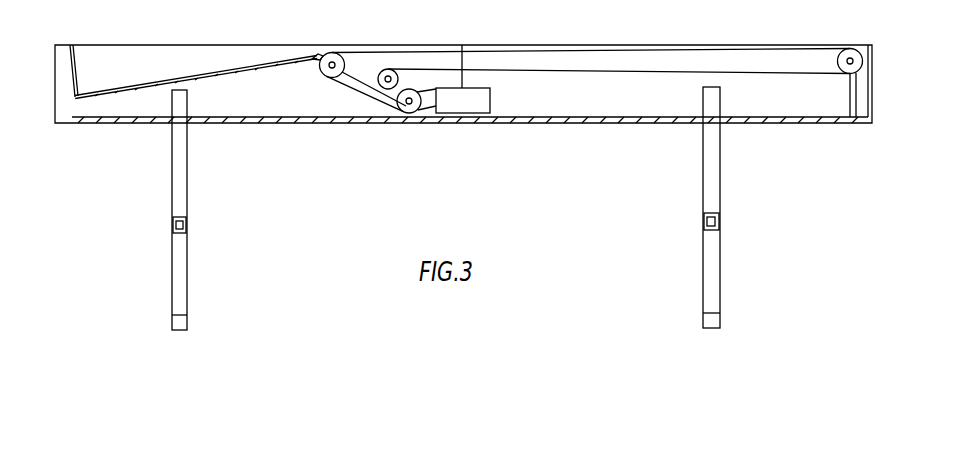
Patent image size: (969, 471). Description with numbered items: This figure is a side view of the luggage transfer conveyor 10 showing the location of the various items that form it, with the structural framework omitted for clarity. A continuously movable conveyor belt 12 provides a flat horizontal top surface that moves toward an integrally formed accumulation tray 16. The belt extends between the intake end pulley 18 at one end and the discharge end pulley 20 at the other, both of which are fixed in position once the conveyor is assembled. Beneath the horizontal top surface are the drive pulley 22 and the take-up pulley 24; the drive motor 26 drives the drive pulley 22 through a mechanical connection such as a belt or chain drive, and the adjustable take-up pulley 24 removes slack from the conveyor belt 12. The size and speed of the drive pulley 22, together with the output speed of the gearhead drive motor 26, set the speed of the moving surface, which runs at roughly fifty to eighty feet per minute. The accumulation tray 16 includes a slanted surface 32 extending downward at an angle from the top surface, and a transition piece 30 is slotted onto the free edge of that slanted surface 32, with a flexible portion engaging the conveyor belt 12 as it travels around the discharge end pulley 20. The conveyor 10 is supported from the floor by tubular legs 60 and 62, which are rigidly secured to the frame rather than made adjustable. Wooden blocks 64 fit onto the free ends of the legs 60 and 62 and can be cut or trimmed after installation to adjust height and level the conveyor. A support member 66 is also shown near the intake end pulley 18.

The luggage transfer conveyor 10 is at (546, 155).
The conveyor belt 12 is at (667, 45).
The accumulation tray 16 is at (78, 68).
The intake end pulley 18 is at (850, 49).
The discharge end pulley 20 is at (343, 58).
The drive pulley 22 is at (408, 113).
The take-up pulley 24 is at (395, 71).
The drive motor 26 is at (472, 108).
The transition piece 30 is at (318, 54).
The slanted surface 32 is at (231, 70).
The leg 60 is at (183, 138).
The leg 62 is at (708, 140).
The wooden block 64 is at (190, 322).
The support bracket 66 is at (850, 112).